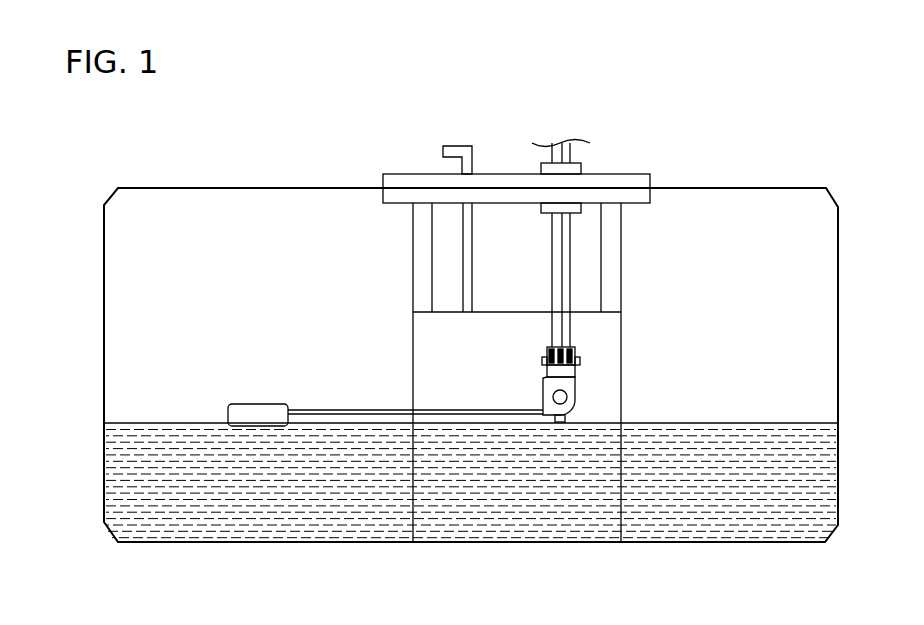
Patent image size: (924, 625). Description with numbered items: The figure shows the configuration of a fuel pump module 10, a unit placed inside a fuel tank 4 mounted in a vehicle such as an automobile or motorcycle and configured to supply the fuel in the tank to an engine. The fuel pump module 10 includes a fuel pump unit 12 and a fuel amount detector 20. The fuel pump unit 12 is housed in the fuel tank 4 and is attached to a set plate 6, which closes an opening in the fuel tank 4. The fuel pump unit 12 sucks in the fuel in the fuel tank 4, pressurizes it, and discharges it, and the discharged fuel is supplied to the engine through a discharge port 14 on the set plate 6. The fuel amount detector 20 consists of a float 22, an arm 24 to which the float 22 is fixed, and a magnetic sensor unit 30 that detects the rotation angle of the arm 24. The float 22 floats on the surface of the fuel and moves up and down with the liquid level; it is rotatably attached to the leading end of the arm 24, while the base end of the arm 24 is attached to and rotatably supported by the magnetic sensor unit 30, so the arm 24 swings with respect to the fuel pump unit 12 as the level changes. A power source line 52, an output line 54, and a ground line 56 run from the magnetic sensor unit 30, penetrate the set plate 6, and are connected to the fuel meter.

The fuel pump module 10 is at (356, 84).
The fuel tank 4 is at (838, 383).
The set plate 6 is at (631, 180).
The discharge port 14 is at (447, 143).
The fuel pump unit 12 is at (428, 323).
The power source line 52 is at (552, 259).
The output line 54 is at (562, 244).
The ground line 56 is at (570, 272).
The magnetic sensor unit 30 is at (577, 351).
The fuel amount detector 20 is at (584, 361).
The float 22 is at (258, 404).
The arm 24 is at (396, 410).